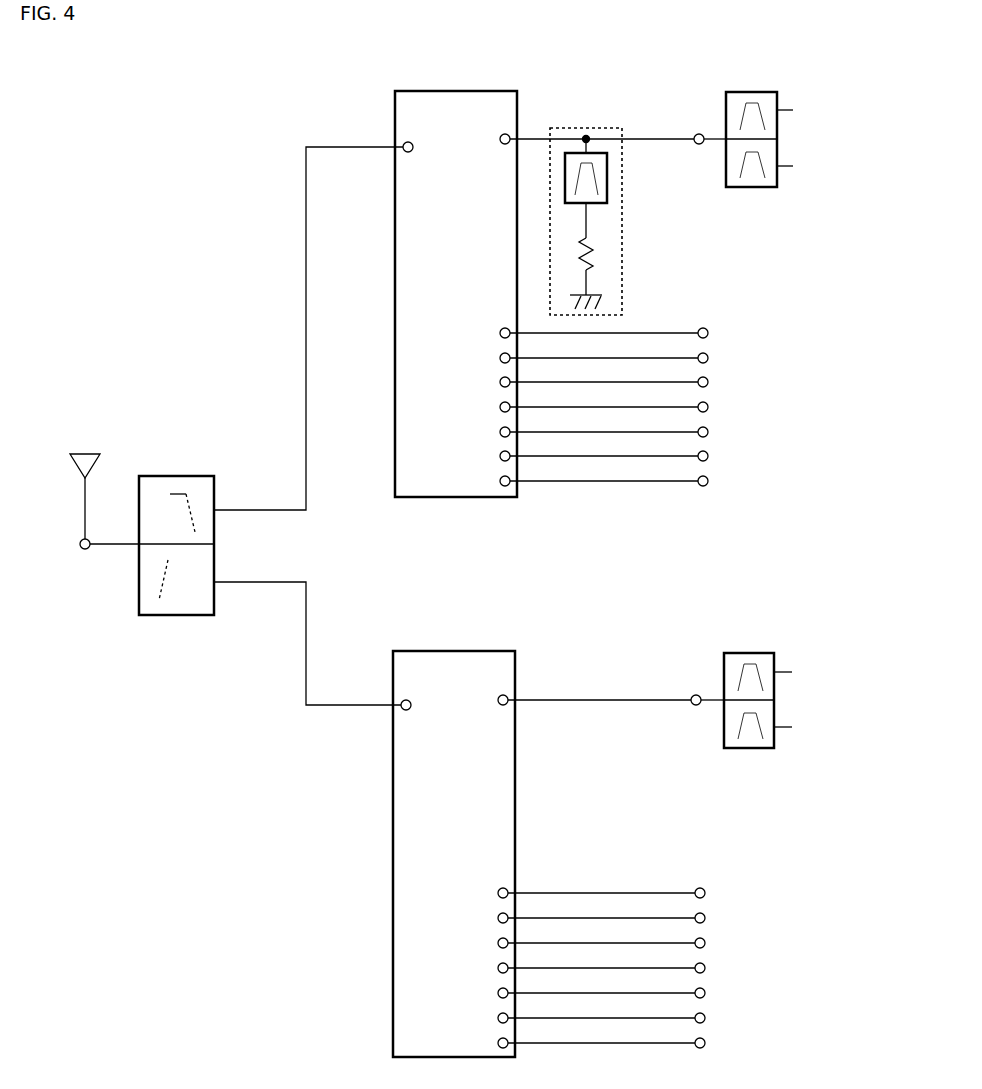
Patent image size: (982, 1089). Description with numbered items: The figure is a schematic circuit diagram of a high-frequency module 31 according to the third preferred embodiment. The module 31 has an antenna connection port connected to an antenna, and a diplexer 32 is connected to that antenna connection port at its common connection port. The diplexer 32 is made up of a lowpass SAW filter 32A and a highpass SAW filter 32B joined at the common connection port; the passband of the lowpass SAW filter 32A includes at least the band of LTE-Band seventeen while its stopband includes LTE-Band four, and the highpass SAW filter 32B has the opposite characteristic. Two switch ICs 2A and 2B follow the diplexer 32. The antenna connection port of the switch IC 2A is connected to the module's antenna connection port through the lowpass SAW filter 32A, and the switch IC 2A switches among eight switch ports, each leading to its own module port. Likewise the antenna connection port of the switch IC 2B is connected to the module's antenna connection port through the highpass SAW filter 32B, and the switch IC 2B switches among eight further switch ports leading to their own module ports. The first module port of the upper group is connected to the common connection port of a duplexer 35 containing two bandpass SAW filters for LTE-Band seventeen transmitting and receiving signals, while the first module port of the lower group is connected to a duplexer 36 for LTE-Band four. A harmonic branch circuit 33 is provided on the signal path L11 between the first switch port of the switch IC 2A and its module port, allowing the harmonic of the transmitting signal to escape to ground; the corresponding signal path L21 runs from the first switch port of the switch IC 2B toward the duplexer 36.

The high-frequency module 31 is at (130, 680).
The diplexer 32 is at (156, 466).
The lowpass SAW filter 32A is at (193, 486).
The highpass SAW filter 32B is at (150, 607).
The switch IC 2A is at (434, 90).
The switch IC 2B is at (432, 650).
The harmonic branch circuit 33 is at (584, 128).
The duplexer 35 is at (750, 86).
The duplexer 36 is at (748, 647).
The signal path L11 is at (531, 134).
The signal path L21 is at (529, 694).